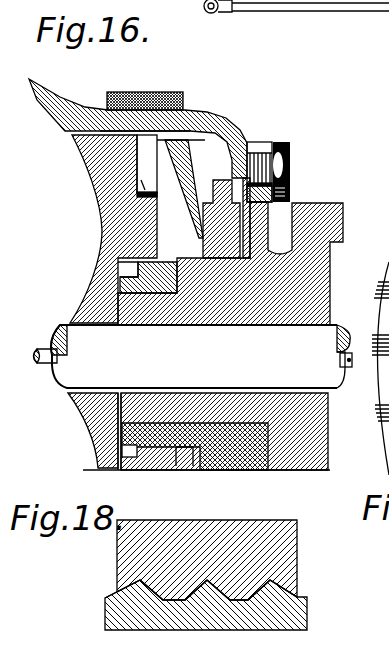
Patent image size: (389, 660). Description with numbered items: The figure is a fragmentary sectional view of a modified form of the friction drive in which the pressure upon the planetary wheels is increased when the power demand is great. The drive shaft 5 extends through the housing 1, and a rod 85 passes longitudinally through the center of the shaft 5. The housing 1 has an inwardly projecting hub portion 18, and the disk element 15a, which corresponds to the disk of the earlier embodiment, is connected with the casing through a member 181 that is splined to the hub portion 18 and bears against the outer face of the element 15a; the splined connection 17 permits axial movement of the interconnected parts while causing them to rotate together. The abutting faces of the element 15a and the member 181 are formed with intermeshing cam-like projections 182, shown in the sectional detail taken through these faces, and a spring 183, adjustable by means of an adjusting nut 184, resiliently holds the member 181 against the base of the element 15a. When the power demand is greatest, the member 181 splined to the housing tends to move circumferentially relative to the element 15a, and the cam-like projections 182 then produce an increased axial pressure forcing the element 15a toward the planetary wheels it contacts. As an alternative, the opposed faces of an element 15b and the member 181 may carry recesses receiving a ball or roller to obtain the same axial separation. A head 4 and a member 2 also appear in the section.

In FIG. 16, the housing 1 is at (254, 126).
In FIG. 16, the clutch member 2 is at (215, 291).
In FIG. 16, the head 4 is at (318, 273).
In FIG. 16, the drive shaft 5 is at (194, 359).
In FIG. 16, the element 15a is at (108, 243).
In FIG. 18, the element 15b is at (214, 530).
In FIG. 16, the spline 17 is at (140, 133).
In FIG. 16, the hub portion 18 is at (120, 281).
In FIG. 16, the rod 85 is at (52, 363).
In FIG. 16, the member 181 is at (175, 129).
In FIG. 18, the member 181 is at (258, 625).
In FIG. 16, the cam-like projections 182 is at (143, 195).
In FIG. 18, the cam-like projections 182 is at (132, 587).
In FIG. 16, the spring 183 is at (190, 152).
In FIG. 16, the adjusting nut 184 is at (291, 197).